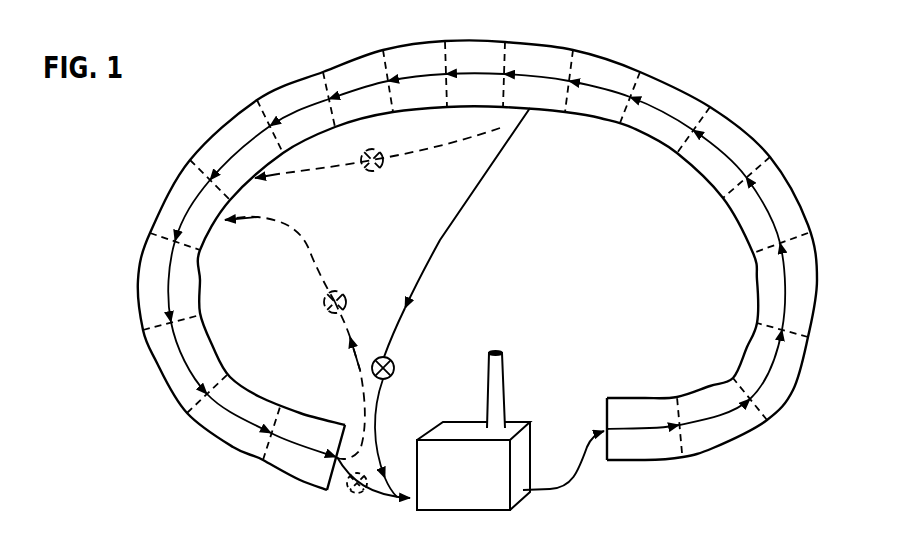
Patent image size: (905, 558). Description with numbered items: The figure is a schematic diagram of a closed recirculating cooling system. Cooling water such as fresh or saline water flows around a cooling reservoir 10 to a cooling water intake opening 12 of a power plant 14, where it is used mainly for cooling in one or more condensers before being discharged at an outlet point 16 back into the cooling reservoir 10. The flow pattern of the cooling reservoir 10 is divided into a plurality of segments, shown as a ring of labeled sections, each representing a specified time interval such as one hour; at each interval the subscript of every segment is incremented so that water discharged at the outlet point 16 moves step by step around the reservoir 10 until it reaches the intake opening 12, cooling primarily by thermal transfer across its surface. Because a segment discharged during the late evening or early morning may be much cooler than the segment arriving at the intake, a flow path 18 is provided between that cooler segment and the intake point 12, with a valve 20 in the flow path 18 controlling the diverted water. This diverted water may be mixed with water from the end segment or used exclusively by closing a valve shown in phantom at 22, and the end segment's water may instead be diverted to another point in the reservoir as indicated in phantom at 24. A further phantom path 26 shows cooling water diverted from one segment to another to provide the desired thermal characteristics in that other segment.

The cooling reservoir 10 is at (166, 431).
The cooling water intake opening 12 is at (402, 503).
The power plant 14 is at (487, 511).
The outlet point 16 is at (540, 492).
The flow path 18 is at (450, 212).
The valve 20 is at (395, 363).
The valve 22 is at (362, 496).
The flow path to another point in the reservoir 24 is at (320, 265).
The segment-to-segment diversion path 26 is at (430, 153).